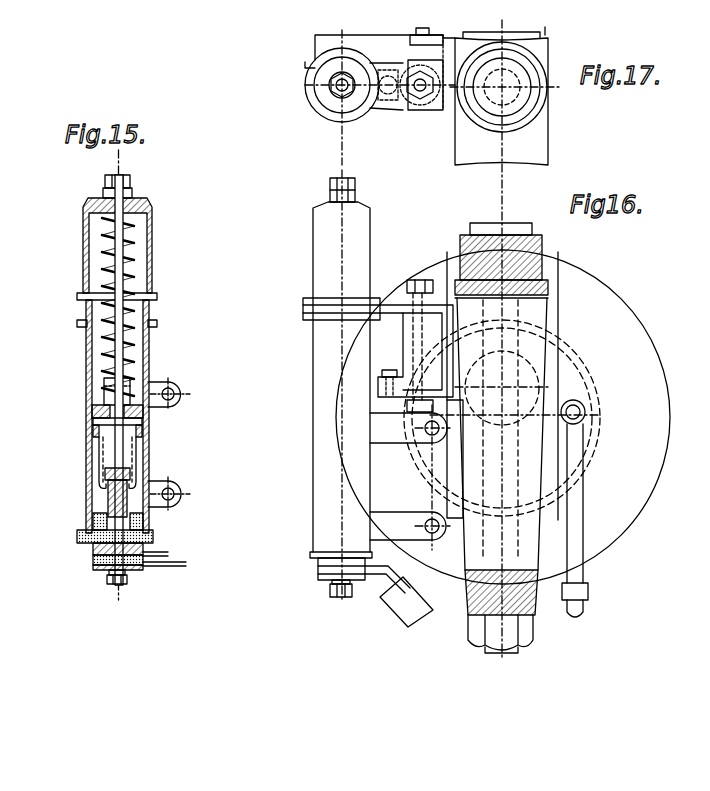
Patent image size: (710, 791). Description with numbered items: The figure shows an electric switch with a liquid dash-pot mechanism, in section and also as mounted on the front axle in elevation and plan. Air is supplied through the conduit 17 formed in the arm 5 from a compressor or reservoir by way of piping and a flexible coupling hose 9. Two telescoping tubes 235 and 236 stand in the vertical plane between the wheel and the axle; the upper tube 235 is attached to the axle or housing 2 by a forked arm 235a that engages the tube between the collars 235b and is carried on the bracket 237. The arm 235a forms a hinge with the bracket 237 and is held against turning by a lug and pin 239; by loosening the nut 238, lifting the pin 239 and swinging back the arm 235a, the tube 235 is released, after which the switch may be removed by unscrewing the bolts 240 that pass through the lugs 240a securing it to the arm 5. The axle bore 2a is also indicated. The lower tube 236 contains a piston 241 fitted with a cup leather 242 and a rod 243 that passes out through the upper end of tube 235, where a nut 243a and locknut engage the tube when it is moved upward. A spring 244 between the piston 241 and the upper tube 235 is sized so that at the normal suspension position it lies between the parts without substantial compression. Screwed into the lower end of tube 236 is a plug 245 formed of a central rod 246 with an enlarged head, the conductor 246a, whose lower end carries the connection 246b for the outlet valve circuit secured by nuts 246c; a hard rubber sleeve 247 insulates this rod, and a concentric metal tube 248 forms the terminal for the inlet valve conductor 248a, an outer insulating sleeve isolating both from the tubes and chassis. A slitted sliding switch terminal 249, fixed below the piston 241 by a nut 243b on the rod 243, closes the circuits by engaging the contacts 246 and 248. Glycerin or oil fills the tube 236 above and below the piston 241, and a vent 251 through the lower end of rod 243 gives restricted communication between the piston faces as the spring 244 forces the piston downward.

In FIG. 17, the axle or housing 2 is at (545, 138).
In FIG. 16, the axle or housing 2 is at (545, 248).
In FIG. 17, the cylinder bore 2a is at (537, 35).
In FIG. 16, the cylinder bore 2a is at (520, 372).
In FIG. 16, the arm 5 is at (596, 385).
In FIG. 16, the flexible coupling hose 9 is at (583, 610).
In FIG. 16, the conduit 17 is at (578, 413).
In FIG. 15, the upper tube 235 is at (152, 219).
In FIG. 17, the upper tube 235 is at (322, 100).
In FIG. 16, the upper tube 235 is at (341, 377).
In FIG. 17, the arm 235a is at (305, 64).
In FIG. 16, the arm 235a is at (400, 278).
In FIG. 15, the collars 235b is at (157, 297).
In FIG. 16, the collars 235b is at (303, 318).
In FIG. 15, the lower tube 236 is at (149, 376).
In FIG. 16, the lower tube 236 is at (349, 403).
In FIG. 17, the bracket 237 is at (448, 103).
In FIG. 16, the bracket 237 is at (440, 330).
In FIG. 17, the nut 238 is at (417, 98).
In FIG. 16, the nut 238 is at (420, 280).
In FIG. 17, the lug and pin 239 is at (390, 95).
In FIG. 16, the lug and pin 239 is at (392, 374).
In FIG. 17, the bolts 240 is at (452, 42).
In FIG. 16, the bolts 240 is at (440, 445).
In FIG. 15, the lugs 240a is at (181, 399).
In FIG. 17, the lugs 240a is at (400, 35).
In FIG. 16, the lugs 240a is at (388, 436).
In FIG. 15, the piston 241 is at (142, 414).
In FIG. 15, the cup leather 242 is at (142, 433).
In FIG. 15, the rod 243 is at (146, 362).
In FIG. 15, the nut 243a is at (130, 195).
In FIG. 17, the nut 243a is at (330, 88).
In FIG. 16, the nut 243a is at (355, 192).
In FIG. 15, the nut 243b is at (90, 396).
In FIG. 15, the spring 244 is at (134, 256).
In FIG. 15, the plug 245 is at (78, 537).
In FIG. 16, the plug 245 is at (312, 556).
In FIG. 15, the rod 246 is at (104, 490).
In FIG. 15, the conductor 246a is at (103, 478).
In FIG. 15, the connection for the electric circuit 246b is at (150, 566).
In FIG. 16, the connection for the electric circuit 246b is at (378, 590).
In FIG. 15, the nuts 246c is at (126, 581).
In FIG. 16, the nuts 246c is at (336, 594).
In FIG. 15, the hard rubber sleeve 247 is at (132, 510).
In FIG. 16, the hard rubber sleeve 247 is at (318, 575).
In FIG. 15, the metal tube 248 is at (110, 508).
In FIG. 15, the conductor 248a is at (172, 547).
In FIG. 16, the conductor 248a is at (365, 580).
In FIG. 15, the switch terminal 249 is at (137, 454).
In FIG. 15, the vent 251 is at (117, 384).